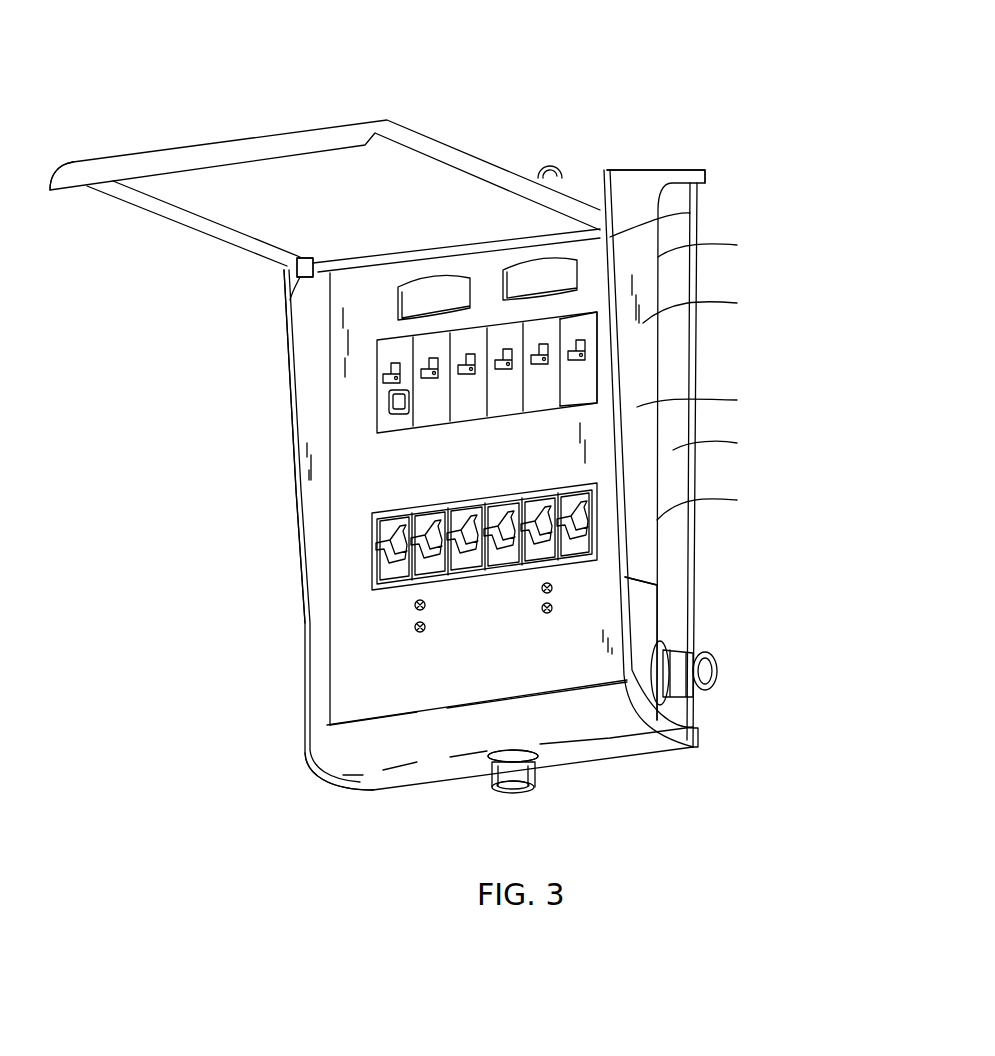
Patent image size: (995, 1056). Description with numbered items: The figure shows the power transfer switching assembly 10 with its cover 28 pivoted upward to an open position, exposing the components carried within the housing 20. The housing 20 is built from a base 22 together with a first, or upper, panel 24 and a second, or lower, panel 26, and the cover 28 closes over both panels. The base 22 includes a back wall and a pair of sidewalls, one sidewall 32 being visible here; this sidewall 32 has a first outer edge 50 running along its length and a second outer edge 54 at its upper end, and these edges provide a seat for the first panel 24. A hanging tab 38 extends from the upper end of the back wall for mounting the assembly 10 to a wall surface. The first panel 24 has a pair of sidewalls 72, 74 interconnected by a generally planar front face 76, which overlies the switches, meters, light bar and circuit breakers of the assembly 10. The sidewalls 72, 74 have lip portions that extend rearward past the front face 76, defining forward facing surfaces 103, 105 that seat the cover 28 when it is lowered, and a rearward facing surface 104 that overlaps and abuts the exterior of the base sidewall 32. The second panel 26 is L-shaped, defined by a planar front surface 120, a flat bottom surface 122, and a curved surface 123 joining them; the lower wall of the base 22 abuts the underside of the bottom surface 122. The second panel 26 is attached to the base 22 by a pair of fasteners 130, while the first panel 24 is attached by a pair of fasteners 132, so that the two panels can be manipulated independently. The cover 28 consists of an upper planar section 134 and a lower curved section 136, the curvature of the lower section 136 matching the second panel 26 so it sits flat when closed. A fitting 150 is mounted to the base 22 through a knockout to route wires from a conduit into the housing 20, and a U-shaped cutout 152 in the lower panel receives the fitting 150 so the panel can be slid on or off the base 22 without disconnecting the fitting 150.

The power transfer switching assembly 10 is at (700, 75).
The housing 20 is at (633, 163).
The base 22 is at (700, 363).
The first panel 24 is at (704, 309).
The second panel 26 is at (643, 603).
The cover 28 is at (323, 122).
The sidewall 32 is at (719, 446).
The hanging tab 38 is at (540, 167).
The first outer edge 50 is at (711, 248).
The second outer edge 54 is at (700, 190).
The sidewall 72 is at (701, 403).
The sidewall 74 is at (310, 385).
The front face 76 is at (450, 474).
The forward facing surface 103 is at (617, 440).
The rearward facing surface 104 is at (716, 506).
The forward facing surface 105 is at (293, 450).
The front surface 120 is at (403, 701).
The bottom surface 122 is at (400, 777).
The curved surface 123 is at (357, 745).
The fasteners 130 is at (540, 603).
The fasteners 132 is at (413, 603).
The upper planar section 134 is at (336, 209).
The lower curved section 136 is at (116, 170).
The fitting 150 is at (490, 773).
The U-shaped cutout 152 is at (553, 765).